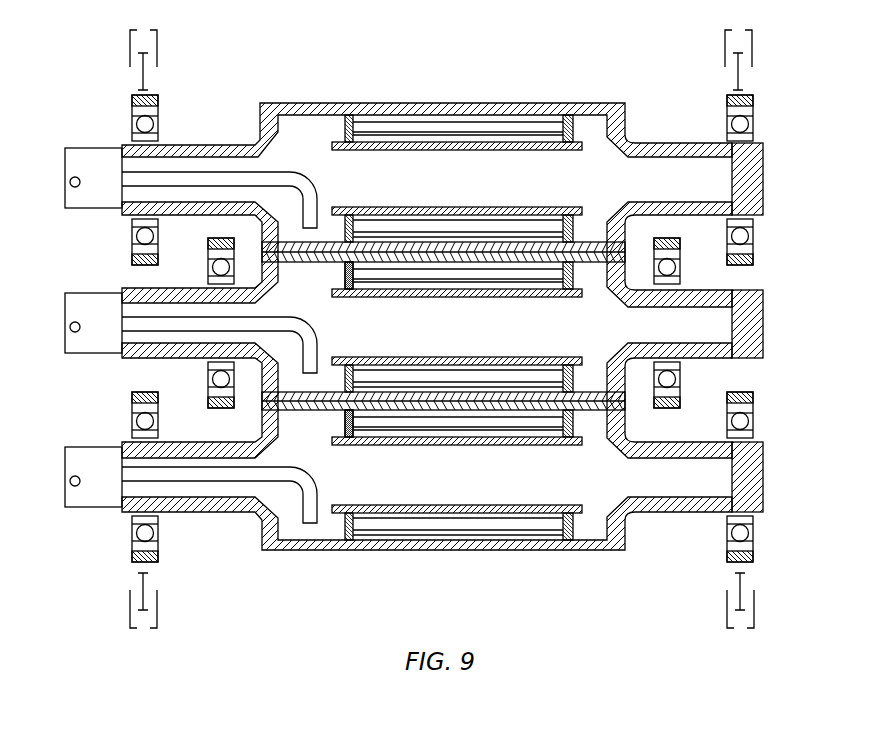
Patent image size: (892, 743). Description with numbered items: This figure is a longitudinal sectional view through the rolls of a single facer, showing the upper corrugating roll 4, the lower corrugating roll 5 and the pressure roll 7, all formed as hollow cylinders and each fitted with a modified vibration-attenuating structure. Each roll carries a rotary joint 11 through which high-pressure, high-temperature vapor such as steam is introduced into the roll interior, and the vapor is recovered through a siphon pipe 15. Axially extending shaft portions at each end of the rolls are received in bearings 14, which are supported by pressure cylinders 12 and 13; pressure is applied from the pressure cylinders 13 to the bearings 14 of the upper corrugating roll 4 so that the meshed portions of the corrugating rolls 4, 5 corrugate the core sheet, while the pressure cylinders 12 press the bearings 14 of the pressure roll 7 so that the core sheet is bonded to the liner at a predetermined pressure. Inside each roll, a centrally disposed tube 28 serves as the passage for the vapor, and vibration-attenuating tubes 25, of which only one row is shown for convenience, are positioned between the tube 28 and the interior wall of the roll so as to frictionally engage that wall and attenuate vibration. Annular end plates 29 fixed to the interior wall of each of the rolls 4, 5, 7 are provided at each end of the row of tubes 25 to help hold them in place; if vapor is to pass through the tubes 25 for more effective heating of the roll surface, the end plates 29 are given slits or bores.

The upper corrugating roll 4 is at (403, 103).
The lower corrugating roll 5 is at (598, 265).
The pressure roll 7 is at (360, 550).
The rotary joint 11 is at (103, 302).
The pressure cylinder 12 is at (157, 617).
The pressure cylinder 13 is at (152, 42).
The bearing 14 is at (158, 120).
The siphon pipe 15 is at (318, 200).
The vibration-attenuating tube 25 is at (497, 130).
The centrally disposed tube 28 is at (470, 207).
The annular end plate 29 is at (342, 268).